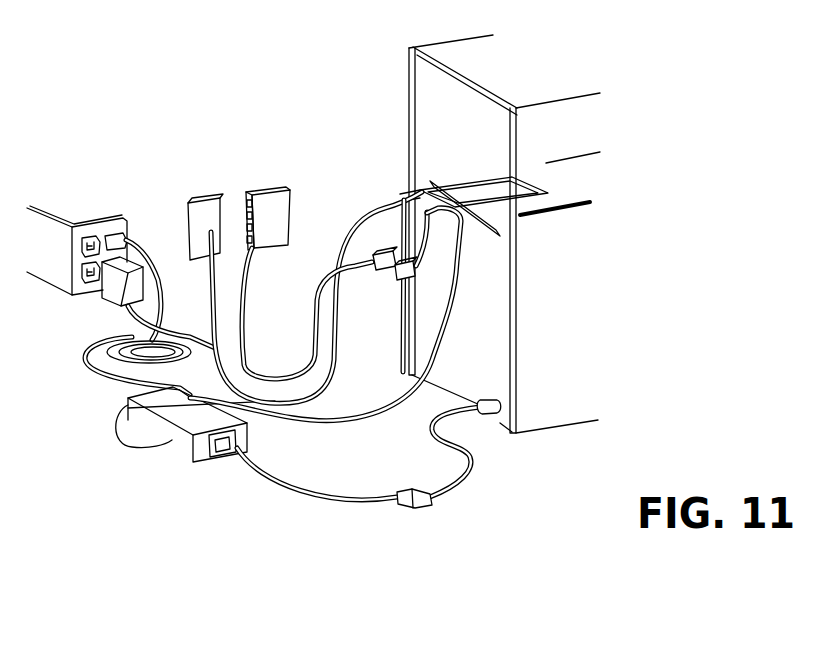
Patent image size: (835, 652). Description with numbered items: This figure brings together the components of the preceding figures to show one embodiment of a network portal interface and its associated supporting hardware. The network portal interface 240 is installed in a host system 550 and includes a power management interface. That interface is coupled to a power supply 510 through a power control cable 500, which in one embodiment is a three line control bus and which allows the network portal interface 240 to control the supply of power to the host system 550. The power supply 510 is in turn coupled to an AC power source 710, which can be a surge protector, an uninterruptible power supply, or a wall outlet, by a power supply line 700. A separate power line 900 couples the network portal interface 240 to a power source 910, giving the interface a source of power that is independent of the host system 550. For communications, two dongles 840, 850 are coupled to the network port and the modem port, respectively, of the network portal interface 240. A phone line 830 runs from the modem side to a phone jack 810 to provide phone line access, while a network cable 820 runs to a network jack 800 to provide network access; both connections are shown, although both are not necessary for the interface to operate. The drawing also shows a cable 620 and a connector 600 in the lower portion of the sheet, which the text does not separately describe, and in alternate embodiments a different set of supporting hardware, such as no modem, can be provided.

The power source 910 is at (121, 209).
The AC power source 710 is at (94, 207).
The phone jack 810 is at (190, 201).
The network jack 800 is at (268, 190).
The phone line 830 is at (209, 301).
The network cable 820 is at (243, 325).
The dongle 840 is at (373, 255).
The dongle 850 is at (400, 282).
The network portal interface 240 is at (592, 175).
The host system 550 is at (596, 402).
The power supply line 700 is at (85, 370).
The power control cable 500 is at (122, 452).
The power supply 510 is at (193, 460).
The power line 900 is at (373, 417).
The cable 620 is at (363, 503).
The connector cable 600 is at (468, 480).